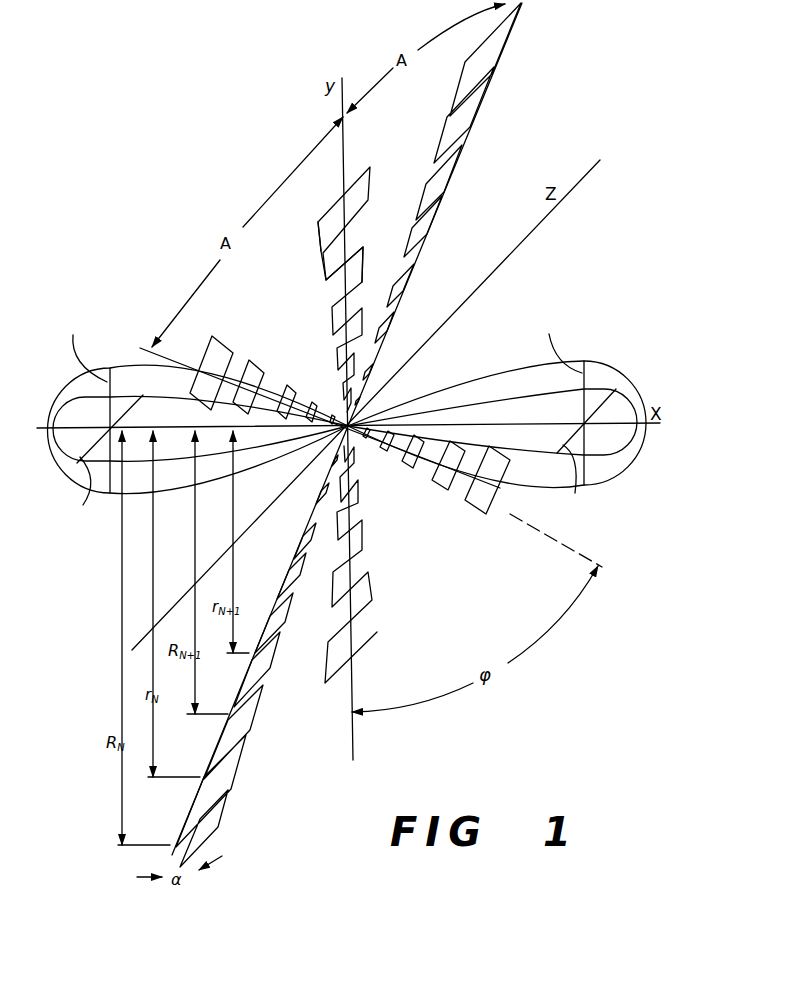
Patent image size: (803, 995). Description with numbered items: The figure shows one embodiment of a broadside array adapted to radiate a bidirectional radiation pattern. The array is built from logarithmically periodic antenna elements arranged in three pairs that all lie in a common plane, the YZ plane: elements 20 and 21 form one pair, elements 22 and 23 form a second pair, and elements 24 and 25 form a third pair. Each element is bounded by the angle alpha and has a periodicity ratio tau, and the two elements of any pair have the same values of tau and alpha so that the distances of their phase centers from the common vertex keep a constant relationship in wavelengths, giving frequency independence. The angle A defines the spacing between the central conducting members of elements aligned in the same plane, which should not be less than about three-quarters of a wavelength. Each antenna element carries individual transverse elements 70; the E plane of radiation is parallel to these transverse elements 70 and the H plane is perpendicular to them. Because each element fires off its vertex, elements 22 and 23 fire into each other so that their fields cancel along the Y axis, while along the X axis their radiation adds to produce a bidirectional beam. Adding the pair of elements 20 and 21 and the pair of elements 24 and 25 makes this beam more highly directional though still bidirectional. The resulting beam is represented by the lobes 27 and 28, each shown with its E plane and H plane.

The logarithmically periodic antenna element 20 is at (194, 343).
The logarithmically periodic antenna element 21 is at (498, 520).
The logarithmically periodic antenna element 22 is at (336, 193).
The logarithmically periodic antenna element 23 is at (362, 654).
The logarithmically periodic antenna element 24 is at (482, 35).
The logarithmically periodic antenna element 25 is at (208, 821).
The lobe 27 is at (477, 382).
The lobe 28 is at (140, 372).
The transverse elements 70 is at (321, 221).